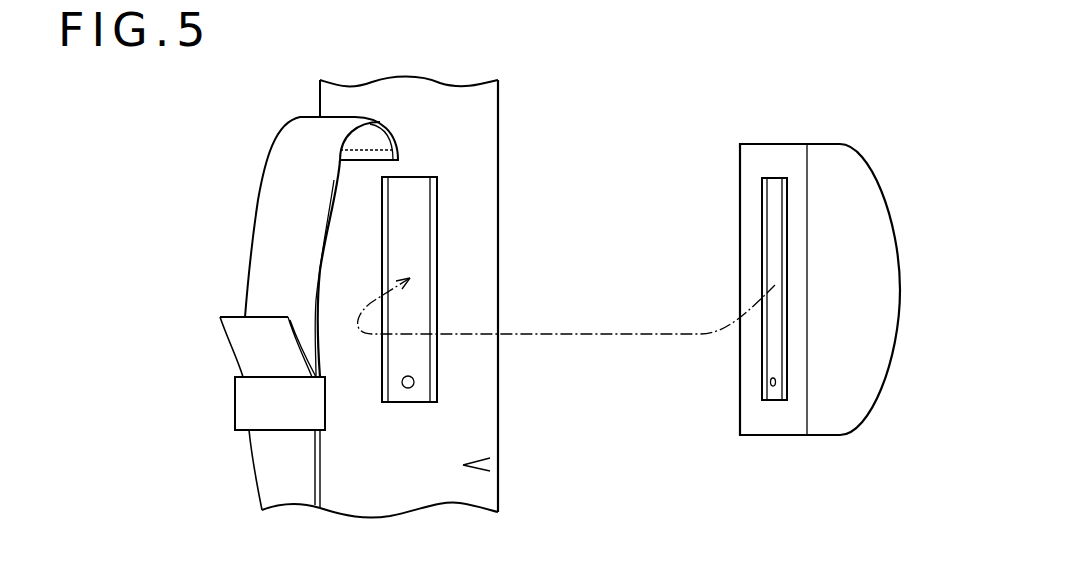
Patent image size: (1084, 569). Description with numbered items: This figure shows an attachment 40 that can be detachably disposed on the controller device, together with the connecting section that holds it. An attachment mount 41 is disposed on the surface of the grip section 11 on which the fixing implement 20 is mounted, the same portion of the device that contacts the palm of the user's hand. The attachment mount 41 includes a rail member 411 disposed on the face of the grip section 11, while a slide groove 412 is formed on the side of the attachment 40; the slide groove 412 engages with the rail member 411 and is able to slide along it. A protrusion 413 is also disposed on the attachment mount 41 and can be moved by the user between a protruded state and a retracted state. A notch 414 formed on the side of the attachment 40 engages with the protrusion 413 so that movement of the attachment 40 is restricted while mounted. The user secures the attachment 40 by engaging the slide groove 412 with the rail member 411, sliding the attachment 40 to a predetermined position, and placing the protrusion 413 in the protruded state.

The grip section 11 is at (486, 465).
The fixing implement 20 is at (275, 230).
The attachment 40 is at (843, 407).
The attachment mount 41 is at (470, 200).
The rail member 411 is at (437, 252).
The slide groove 412 is at (765, 240).
The protrusion 413 is at (418, 378).
The notch 414 is at (772, 405).